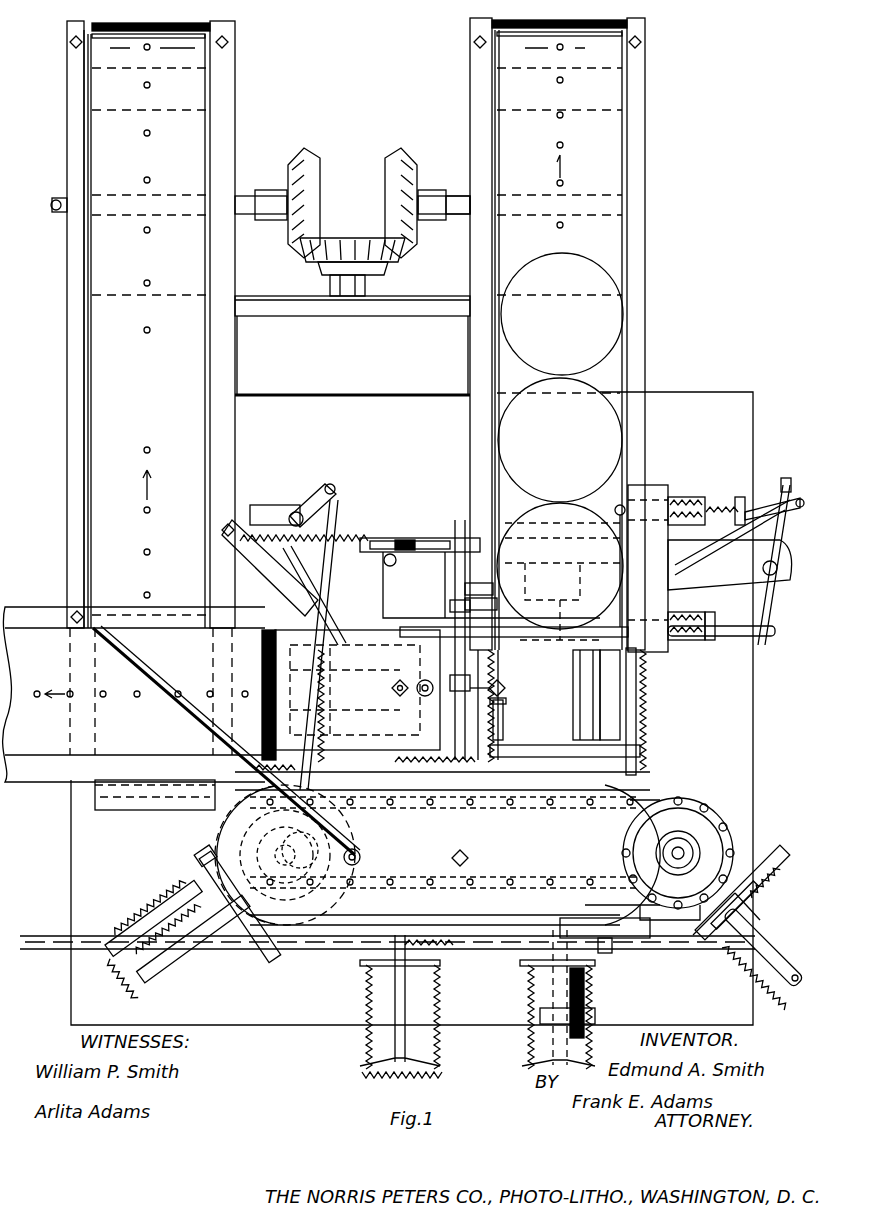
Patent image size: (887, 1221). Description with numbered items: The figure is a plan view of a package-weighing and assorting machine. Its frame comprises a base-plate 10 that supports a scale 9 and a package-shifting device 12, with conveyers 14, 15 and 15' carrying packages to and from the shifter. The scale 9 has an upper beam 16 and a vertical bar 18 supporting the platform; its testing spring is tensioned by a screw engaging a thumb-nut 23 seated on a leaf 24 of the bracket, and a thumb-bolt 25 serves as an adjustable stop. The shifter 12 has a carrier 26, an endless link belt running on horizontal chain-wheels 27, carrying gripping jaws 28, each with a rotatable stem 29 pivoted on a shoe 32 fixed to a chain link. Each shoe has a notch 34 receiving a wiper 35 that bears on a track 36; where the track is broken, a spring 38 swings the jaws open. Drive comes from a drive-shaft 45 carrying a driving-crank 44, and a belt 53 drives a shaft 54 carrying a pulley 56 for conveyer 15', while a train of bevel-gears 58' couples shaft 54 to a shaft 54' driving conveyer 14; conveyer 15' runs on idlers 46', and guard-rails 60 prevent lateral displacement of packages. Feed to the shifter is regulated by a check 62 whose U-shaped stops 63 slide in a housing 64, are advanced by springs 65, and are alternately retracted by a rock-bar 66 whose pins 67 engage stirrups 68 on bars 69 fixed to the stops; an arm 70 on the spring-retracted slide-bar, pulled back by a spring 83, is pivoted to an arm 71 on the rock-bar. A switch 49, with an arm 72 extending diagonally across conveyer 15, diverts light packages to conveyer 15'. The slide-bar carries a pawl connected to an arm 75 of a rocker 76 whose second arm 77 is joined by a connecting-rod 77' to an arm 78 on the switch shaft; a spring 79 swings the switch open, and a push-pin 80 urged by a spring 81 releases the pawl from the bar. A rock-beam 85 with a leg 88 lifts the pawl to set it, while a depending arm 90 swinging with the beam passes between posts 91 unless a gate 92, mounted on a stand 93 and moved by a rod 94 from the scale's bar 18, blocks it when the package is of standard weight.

The scale 9 is at (322, 645).
The base-plate 10 is at (720, 392).
The package-shifting device 12 is at (345, 952).
The conveyer 14 is at (612, 170).
The conveyer 15 is at (139, 675).
The conveyer 15' is at (172, 324).
The upper beam 16 is at (335, 652).
The vertical bar 18 is at (428, 718).
The thumb-nut 23 is at (424, 676).
The leaf 24 is at (365, 710).
The thumb-bolt 25 is at (392, 688).
The carrier 26 is at (720, 812).
The chain-wheels 27 is at (659, 858).
The package-gripping jaws 28 is at (646, 722).
The stem 29 is at (775, 962).
The shoe 32 is at (200, 848).
The notch 34 is at (690, 950).
The wiper 35 is at (725, 922).
The track 36 is at (645, 935).
The spring 38 is at (628, 705).
The driving-crank 44 is at (598, 690).
The drive-shaft 45 is at (565, 703).
The idlers 46' is at (154, 457).
The switch 49 is at (358, 848).
The belt 53 is at (290, 950).
The shaft 54 is at (42, 194).
The shaft 54' is at (451, 188).
The pulley 56 is at (92, 298).
The train of bevel-gears 58' is at (352, 222).
The guard-rails 60 is at (237, 272).
The check 62 is at (678, 496).
The stops 63 is at (615, 512).
The housing 64 is at (658, 652).
The springs 65 is at (700, 500).
The rock-bar 66 is at (762, 572).
The pins 67 is at (788, 480).
The stirrups 68 is at (458, 560).
The bars 69 is at (737, 496).
The arm 70 is at (730, 545).
The arm 71 is at (360, 858).
The arm 72 is at (200, 725).
The arm 75 is at (325, 530).
The rocker 76 is at (292, 512).
The second arm 77 is at (312, 490).
The connecting-rod 77' is at (320, 595).
The arm 78 is at (308, 857).
The spring 79 is at (285, 855).
The push-pin 80 is at (415, 540).
The spring 81 is at (405, 538).
The spring 83 is at (275, 575).
The rock-beam 85 is at (465, 592).
The leg 88 is at (491, 585).
The depending arm 90 is at (464, 600).
The posts 91 is at (466, 640).
The gate 92 is at (498, 674).
The stand 93 is at (503, 712).
The rod 94 is at (505, 688).